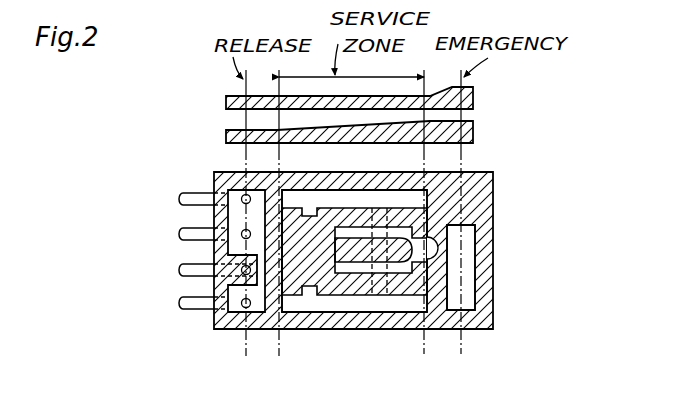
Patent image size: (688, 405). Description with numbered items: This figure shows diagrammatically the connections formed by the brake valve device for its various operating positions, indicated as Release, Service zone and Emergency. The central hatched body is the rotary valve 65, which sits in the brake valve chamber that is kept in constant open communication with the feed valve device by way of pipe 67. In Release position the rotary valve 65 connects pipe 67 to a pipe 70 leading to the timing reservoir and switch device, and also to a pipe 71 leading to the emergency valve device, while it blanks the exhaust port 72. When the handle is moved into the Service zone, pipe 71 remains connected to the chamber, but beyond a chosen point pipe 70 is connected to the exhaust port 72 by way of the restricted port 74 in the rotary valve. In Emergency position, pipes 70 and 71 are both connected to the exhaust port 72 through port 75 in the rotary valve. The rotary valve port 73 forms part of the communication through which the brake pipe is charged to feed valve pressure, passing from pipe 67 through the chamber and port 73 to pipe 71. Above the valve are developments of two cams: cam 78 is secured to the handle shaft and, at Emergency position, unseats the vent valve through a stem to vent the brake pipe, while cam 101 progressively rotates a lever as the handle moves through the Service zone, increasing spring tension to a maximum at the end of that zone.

The rotary valve 65 is at (494, 175).
The pipe 67 is at (181, 204).
The pipe 70 is at (181, 239).
The pipe 71 is at (181, 308).
The exhaust port 72 is at (181, 275).
The rotary valve port 73 is at (345, 190).
The restricted port 74 is at (426, 238).
The port 75 is at (470, 275).
The cam 78 is at (474, 97).
The cam 101 is at (474, 135).